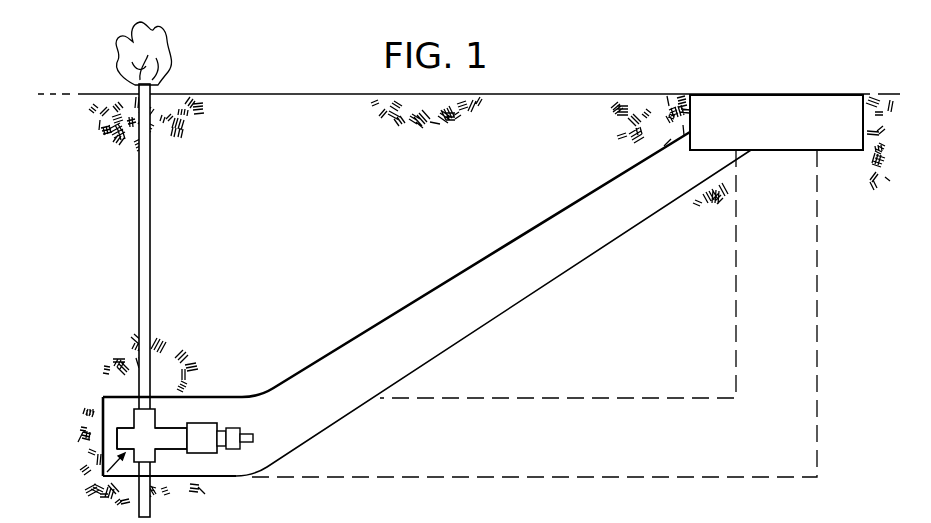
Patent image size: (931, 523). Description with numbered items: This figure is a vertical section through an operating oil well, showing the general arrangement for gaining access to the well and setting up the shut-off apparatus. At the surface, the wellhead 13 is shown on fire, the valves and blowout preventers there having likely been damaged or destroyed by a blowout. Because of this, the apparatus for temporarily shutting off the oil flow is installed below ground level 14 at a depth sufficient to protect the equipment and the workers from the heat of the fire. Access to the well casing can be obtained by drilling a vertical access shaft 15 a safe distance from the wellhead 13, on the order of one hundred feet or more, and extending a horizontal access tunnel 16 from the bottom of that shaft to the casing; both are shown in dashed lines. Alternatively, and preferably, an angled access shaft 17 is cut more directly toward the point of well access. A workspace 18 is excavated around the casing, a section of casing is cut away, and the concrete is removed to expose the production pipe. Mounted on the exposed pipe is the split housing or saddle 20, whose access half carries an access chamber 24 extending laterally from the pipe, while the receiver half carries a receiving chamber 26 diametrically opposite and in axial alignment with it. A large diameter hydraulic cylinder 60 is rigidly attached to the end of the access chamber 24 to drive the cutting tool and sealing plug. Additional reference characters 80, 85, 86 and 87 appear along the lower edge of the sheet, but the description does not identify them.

The wellhead 13 is at (151, 87).
The ground level 14 is at (302, 93).
The vertical access shaft 15 is at (818, 290).
The horizontal access tunnel 16 is at (452, 398).
The angled access shaft 17 is at (420, 294).
The workspace 18 is at (102, 477).
The split housing or saddle 20 is at (163, 413).
The access chamber 24 is at (172, 442).
The receiving chamber 26 is at (128, 428).
The hydraulic cylinder 60 is at (200, 425).
The bottom component 80 is at (639, 512).
The bottom component 85 is at (719, 517).
The bottom component 86 is at (411, 517).
The bottom component 87 is at (527, 517).